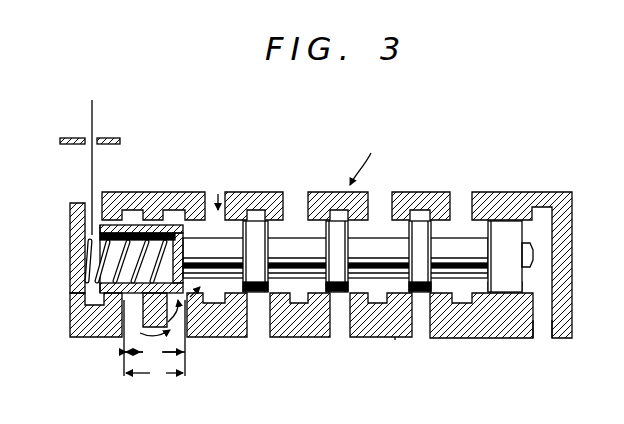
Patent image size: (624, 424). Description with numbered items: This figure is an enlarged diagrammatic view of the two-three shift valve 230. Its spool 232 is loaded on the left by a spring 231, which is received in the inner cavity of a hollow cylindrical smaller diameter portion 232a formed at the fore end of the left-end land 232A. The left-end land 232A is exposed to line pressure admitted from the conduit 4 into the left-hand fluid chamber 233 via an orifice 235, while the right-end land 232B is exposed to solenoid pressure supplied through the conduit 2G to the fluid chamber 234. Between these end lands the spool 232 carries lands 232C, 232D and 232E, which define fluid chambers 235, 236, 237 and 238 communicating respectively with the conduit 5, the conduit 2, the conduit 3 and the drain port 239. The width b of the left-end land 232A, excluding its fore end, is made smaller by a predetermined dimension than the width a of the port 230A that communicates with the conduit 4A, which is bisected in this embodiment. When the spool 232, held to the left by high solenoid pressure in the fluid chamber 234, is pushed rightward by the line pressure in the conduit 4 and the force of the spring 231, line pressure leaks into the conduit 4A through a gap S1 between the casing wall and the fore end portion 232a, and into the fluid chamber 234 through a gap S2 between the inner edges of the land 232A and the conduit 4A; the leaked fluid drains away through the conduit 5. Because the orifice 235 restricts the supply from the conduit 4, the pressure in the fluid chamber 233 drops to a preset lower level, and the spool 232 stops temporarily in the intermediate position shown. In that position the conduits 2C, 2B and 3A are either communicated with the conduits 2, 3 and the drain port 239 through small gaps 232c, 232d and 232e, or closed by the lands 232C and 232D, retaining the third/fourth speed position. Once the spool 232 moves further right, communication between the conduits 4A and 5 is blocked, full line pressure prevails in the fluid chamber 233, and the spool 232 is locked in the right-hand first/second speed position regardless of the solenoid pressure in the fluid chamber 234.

The 2-3 shift valve 230 is at (335, 206).
The spool 232 is at (508, 224).
The smaller diameter portion 232a is at (118, 228).
The left-end land 232A is at (165, 232).
The right-end land 232B is at (470, 331).
The land 232C is at (268, 288).
The land 232D is at (350, 288).
The land 232E is at (432, 288).
The small gap 232c is at (265, 298).
The small gap 232d is at (338, 298).
The small gap 232e is at (391, 337).
The spring 231 is at (84, 270).
The left-hand fluid chamber 233 is at (85, 318).
The fluid chamber 234 is at (528, 325).
The orifice 235 is at (106, 141).
The fluid chamber 236 is at (297, 232).
The fluid chamber 237 is at (378, 232).
The fluid chamber 238 is at (491, 254).
The drain port 239 is at (460, 197).
The port 230A is at (123, 322).
The conduit 2 is at (296, 210).
The conduit 3 is at (380, 205).
The conduit 4 is at (90, 182).
The conduit 4A is at (122, 303).
The conduit 5 is at (212, 217).
The conduit 2B is at (343, 334).
The conduit 2C is at (260, 334).
The conduit 2G is at (541, 326).
The conduit 3A is at (417, 324).
The gap S1 is at (131, 261).
The gap S2 is at (191, 267).